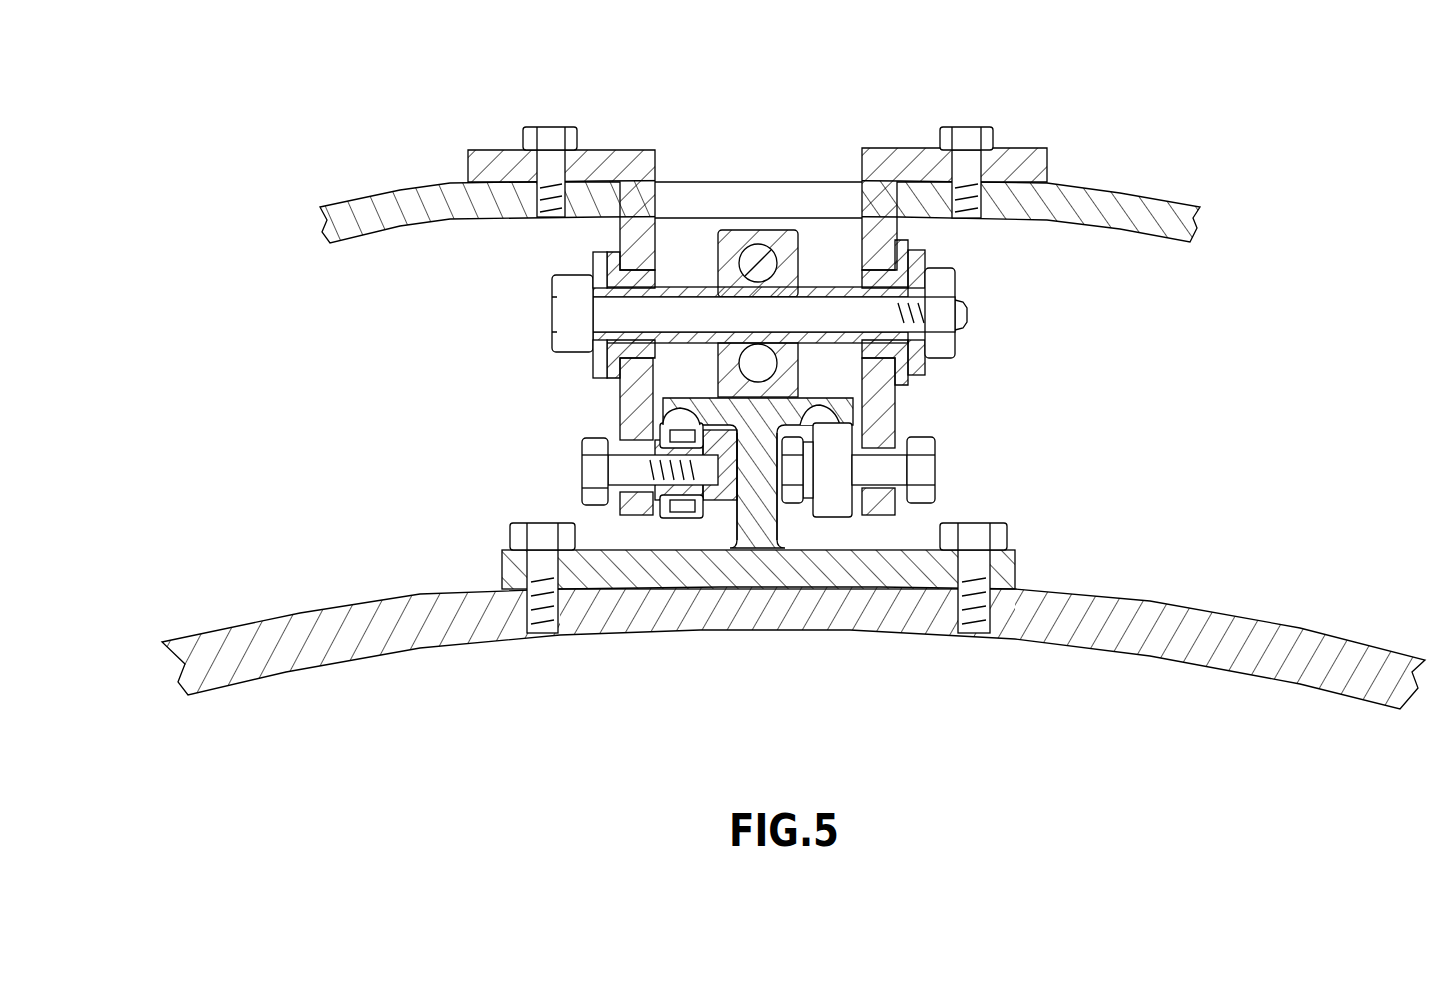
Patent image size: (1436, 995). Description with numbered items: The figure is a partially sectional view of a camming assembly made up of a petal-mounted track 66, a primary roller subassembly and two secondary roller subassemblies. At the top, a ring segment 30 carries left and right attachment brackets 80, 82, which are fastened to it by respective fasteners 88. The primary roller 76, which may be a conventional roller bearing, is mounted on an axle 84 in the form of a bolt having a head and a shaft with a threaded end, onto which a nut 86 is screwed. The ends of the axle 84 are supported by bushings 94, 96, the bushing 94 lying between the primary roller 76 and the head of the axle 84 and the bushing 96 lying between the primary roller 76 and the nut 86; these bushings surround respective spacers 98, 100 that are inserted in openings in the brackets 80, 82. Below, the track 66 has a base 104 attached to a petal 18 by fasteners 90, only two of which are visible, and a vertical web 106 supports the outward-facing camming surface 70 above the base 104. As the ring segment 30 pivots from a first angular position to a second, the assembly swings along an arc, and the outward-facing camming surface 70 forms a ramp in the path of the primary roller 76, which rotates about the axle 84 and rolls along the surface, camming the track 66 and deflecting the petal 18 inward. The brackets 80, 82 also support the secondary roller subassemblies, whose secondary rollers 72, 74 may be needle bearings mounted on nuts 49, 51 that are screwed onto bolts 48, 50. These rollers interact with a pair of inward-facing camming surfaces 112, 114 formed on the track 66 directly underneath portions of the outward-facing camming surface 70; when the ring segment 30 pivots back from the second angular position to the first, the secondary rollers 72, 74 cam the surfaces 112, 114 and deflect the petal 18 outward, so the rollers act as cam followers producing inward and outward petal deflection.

The petal 18 is at (1258, 620).
The ring segment 30 is at (1172, 206).
The bolt 48 is at (596, 507).
The nut 49 is at (745, 510).
The bolt 50 is at (922, 470).
The nut 51 is at (798, 505).
The track 66 is at (853, 408).
The outward-facing camming surface 70 is at (625, 430).
The secondary roller 72 is at (672, 515).
The secondary roller 74 is at (837, 517).
The primary roller 76 is at (755, 228).
The left attachment bracket 80 is at (622, 150).
The right attachment bracket 82 is at (898, 148).
The axle 84 is at (618, 315).
The nut 86 is at (937, 278).
The fasteners 88 is at (530, 133).
The fasteners 90 is at (520, 535).
The bushing 94 is at (610, 385).
The bushing 96 is at (903, 372).
The spacer 98 is at (682, 290).
The spacer 100 is at (915, 353).
The base 104 is at (905, 573).
The vertical web 106 is at (737, 522).
The inward-facing camming surface 112 is at (700, 428).
The inward-facing camming surface 114 is at (820, 428).